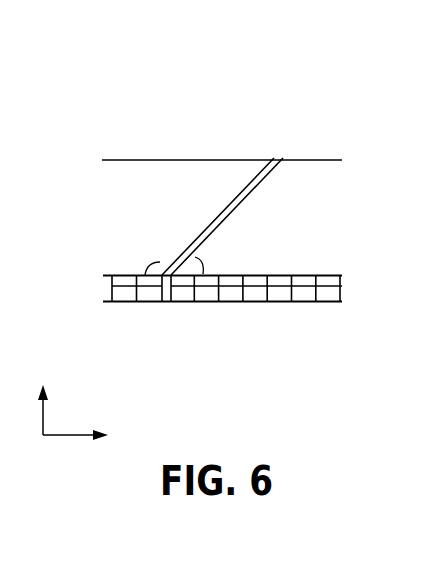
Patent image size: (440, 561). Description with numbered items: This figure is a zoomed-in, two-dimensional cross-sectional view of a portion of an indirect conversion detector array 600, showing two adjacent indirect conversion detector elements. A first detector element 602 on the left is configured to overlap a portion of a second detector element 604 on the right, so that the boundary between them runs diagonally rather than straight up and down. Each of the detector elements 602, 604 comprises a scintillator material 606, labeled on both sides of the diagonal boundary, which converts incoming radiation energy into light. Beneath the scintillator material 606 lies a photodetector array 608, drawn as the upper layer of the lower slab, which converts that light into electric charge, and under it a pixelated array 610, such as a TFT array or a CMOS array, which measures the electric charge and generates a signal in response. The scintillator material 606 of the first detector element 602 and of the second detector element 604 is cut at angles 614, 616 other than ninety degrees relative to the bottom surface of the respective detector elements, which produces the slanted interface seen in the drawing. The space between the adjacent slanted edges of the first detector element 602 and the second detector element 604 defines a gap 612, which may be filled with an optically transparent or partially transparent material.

The indirect conversion detector array 600 is at (123, 59).
The first detector element 602 is at (128, 160).
The second detector element 604 is at (333, 160).
The scintillator material 606 is at (135, 186).
The photodetector array 608 is at (80, 280).
The pixelated array 610 is at (80, 297).
The gap 612 is at (297, 143).
The angle 614 is at (157, 262).
The angle 616 is at (204, 265).